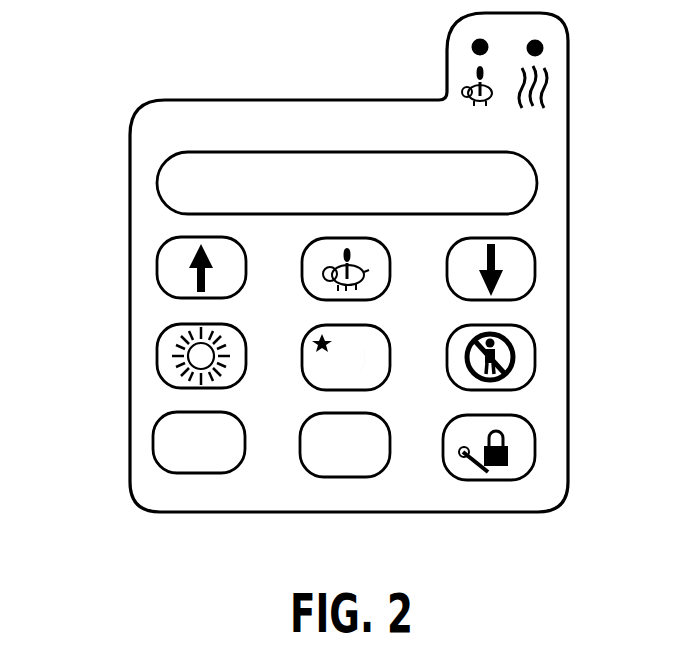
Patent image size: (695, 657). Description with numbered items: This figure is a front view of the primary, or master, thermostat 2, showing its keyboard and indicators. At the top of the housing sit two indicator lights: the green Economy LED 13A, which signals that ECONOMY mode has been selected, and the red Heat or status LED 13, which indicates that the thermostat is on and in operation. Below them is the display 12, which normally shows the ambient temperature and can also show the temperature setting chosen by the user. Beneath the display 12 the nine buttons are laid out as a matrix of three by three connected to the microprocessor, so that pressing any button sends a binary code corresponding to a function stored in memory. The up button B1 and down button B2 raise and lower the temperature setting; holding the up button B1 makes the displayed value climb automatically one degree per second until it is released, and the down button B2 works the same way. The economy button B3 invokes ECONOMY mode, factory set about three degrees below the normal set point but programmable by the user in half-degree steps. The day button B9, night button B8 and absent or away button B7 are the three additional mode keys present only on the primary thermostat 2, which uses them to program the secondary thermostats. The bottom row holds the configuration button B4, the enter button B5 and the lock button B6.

The primary thermostat 2 is at (556, 207).
The display 12 is at (520, 179).
The status LED 13 is at (543, 46).
The Economy LED 13A is at (474, 45).
The up button B1 is at (162, 271).
The down button B2 is at (532, 270).
The economy button B3 is at (312, 243).
The configuration button B4 is at (157, 440).
The enter button B5 is at (343, 470).
The lock button B6 is at (527, 443).
The absent button B7 is at (525, 361).
The night button B8 is at (315, 377).
The day button B9 is at (162, 355).